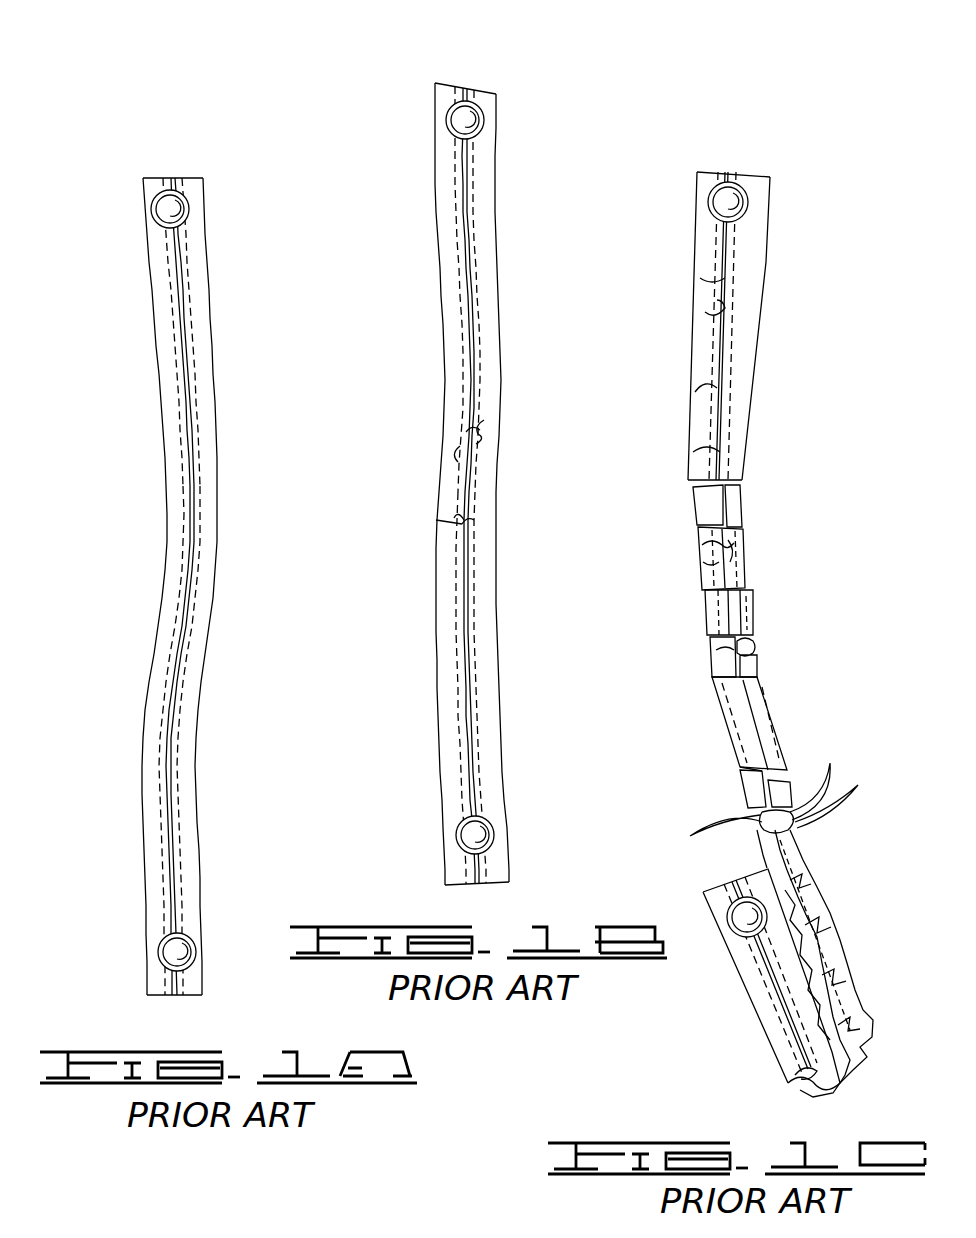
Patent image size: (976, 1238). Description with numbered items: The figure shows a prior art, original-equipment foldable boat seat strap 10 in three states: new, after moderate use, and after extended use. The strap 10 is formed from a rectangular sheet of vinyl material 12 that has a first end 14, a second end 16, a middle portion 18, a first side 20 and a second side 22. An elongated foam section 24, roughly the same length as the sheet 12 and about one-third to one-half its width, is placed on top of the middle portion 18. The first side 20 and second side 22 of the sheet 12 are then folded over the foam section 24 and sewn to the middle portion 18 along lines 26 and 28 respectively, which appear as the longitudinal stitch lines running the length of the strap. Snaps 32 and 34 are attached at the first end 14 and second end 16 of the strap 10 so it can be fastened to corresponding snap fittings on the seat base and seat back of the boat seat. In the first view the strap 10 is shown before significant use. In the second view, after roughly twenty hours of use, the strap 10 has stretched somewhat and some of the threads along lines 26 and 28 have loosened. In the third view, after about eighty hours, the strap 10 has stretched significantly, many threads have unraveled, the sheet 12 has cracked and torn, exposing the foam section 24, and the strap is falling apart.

In FIG. 1A, the foldable boat seat strap 10 is at (146, 133).
In FIG. 1B, the foldable boat seat strap 10 is at (522, 80).
In FIG. 1C, the foldable boat seat strap 10 is at (781, 135).
In FIG. 1A, the rectangular sheet of vinyl material 12 is at (192, 245).
In FIG. 1B, the rectangular sheet of vinyl material 12 is at (483, 148).
In FIG. 1C, the rectangular sheet of vinyl material 12 is at (745, 242).
In FIG. 1A, the first end 14 is at (190, 178).
In FIG. 1B, the first end 14 is at (452, 87).
In FIG. 1C, the first end 14 is at (712, 172).
In FIG. 1A, the second end 16 is at (158, 995).
In FIG. 1B, the second end 16 is at (457, 887).
In FIG. 1C, the second end 16 is at (710, 892).
In FIG. 1A, the middle portion 18 is at (193, 303).
In FIG. 1B, the middle portion 18 is at (480, 222).
In FIG. 1C, the middle portion 18 is at (738, 343).
In FIG. 1A, the first side 20 is at (180, 372).
In FIG. 1B, the first side 20 is at (472, 327).
In FIG. 1C, the first side 20 is at (715, 382).
In FIG. 1A, the second side 22 is at (187, 403).
In FIG. 1B, the second side 22 is at (473, 363).
In FIG. 1C, the second side 22 is at (718, 445).
In FIG. 1B, the elongated foam section 24 is at (460, 472).
In FIG. 1C, the elongated foam section 24 is at (702, 482).
In FIG. 1A, the sewing line 26 is at (173, 605).
In FIG. 1B, the sewing line 26 is at (455, 673).
In FIG. 1C, the sewing line 26 is at (708, 622).
In FIG. 1A, the sewing line 28 is at (193, 587).
In FIG. 1B, the sewing line 28 is at (478, 680).
In FIG. 1C, the sewing line 28 is at (740, 612).
In FIG. 1A, the snap 32 is at (160, 210).
In FIG. 1B, the snap 32 is at (458, 120).
In FIG. 1C, the snap 32 is at (717, 202).
In FIG. 1A, the snap 34 is at (168, 945).
In FIG. 1B, the snap 34 is at (470, 833).
In FIG. 1C, the snap 34 is at (738, 930).